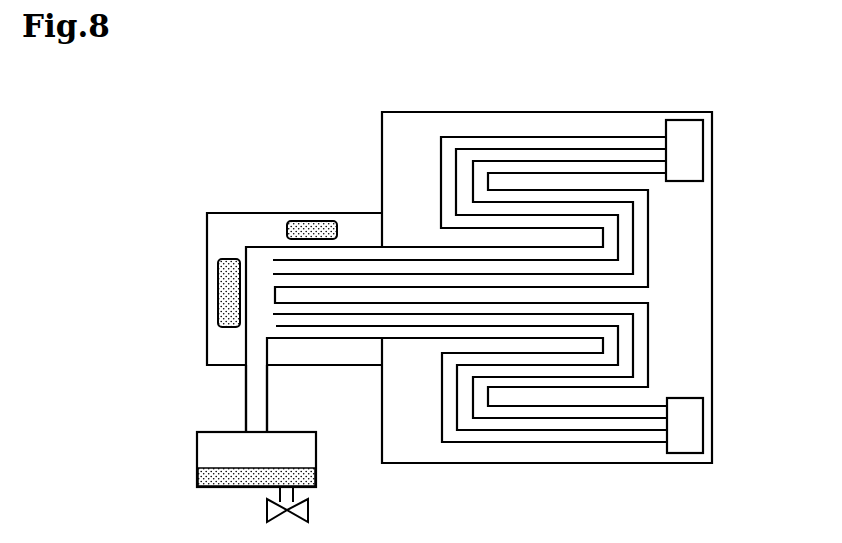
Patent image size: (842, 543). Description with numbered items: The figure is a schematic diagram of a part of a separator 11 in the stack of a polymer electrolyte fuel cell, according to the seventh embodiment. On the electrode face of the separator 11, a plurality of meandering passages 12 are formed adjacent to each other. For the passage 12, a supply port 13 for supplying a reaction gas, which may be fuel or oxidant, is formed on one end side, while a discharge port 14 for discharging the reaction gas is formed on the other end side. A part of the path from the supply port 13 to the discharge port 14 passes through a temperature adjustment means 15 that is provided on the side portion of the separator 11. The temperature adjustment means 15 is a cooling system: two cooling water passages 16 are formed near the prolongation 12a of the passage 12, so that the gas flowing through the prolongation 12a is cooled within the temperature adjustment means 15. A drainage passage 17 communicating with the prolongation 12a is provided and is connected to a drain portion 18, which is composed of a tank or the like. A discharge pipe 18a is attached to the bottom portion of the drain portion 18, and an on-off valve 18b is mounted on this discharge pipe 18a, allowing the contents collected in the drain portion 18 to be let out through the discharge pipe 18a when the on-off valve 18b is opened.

The separator 11 is at (698, 322).
The meandering passage 12 is at (620, 263).
The prolongation of the passage 12a is at (342, 315).
The supply port 13 is at (692, 145).
The discharge port 14 is at (692, 427).
The temperature adjustment means 15 is at (250, 233).
The cooling water passage 16 is at (305, 222).
The drainage passage 17 is at (250, 386).
The drain portion 18 is at (212, 449).
The discharge pipe 18a is at (277, 492).
The on-off valve 18b is at (310, 512).